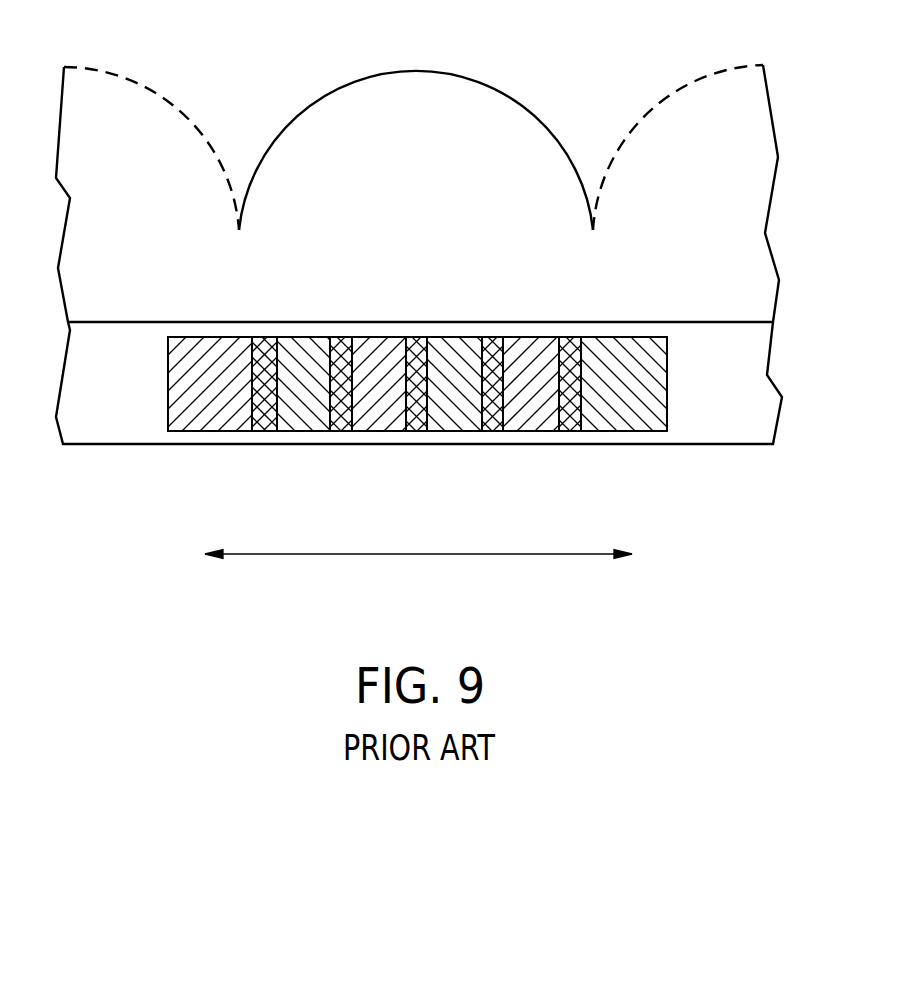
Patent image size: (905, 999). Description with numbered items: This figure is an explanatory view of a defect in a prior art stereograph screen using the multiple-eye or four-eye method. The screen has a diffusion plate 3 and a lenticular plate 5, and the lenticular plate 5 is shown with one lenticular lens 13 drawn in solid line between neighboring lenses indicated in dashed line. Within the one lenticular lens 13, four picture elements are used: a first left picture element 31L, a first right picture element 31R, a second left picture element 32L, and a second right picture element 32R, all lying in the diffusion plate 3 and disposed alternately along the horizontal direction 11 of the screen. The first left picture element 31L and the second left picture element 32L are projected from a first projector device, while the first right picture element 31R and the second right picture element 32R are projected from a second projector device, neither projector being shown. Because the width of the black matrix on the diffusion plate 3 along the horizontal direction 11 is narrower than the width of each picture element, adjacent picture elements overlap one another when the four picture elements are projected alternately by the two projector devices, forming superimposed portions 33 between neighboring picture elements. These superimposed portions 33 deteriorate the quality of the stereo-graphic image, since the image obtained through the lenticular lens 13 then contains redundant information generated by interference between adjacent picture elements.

The diffusion plate 3 is at (752, 382).
The lenticular plate 5 is at (748, 215).
The horizontal direction 11 is at (390, 554).
The lenticular lens 13 is at (420, 64).
The first left picture element 31L is at (306, 431).
The first right picture element 31R is at (385, 431).
The second left picture element 32L is at (457, 431).
The second right picture element 32R is at (533, 431).
The superimposed portions 33 is at (340, 337).